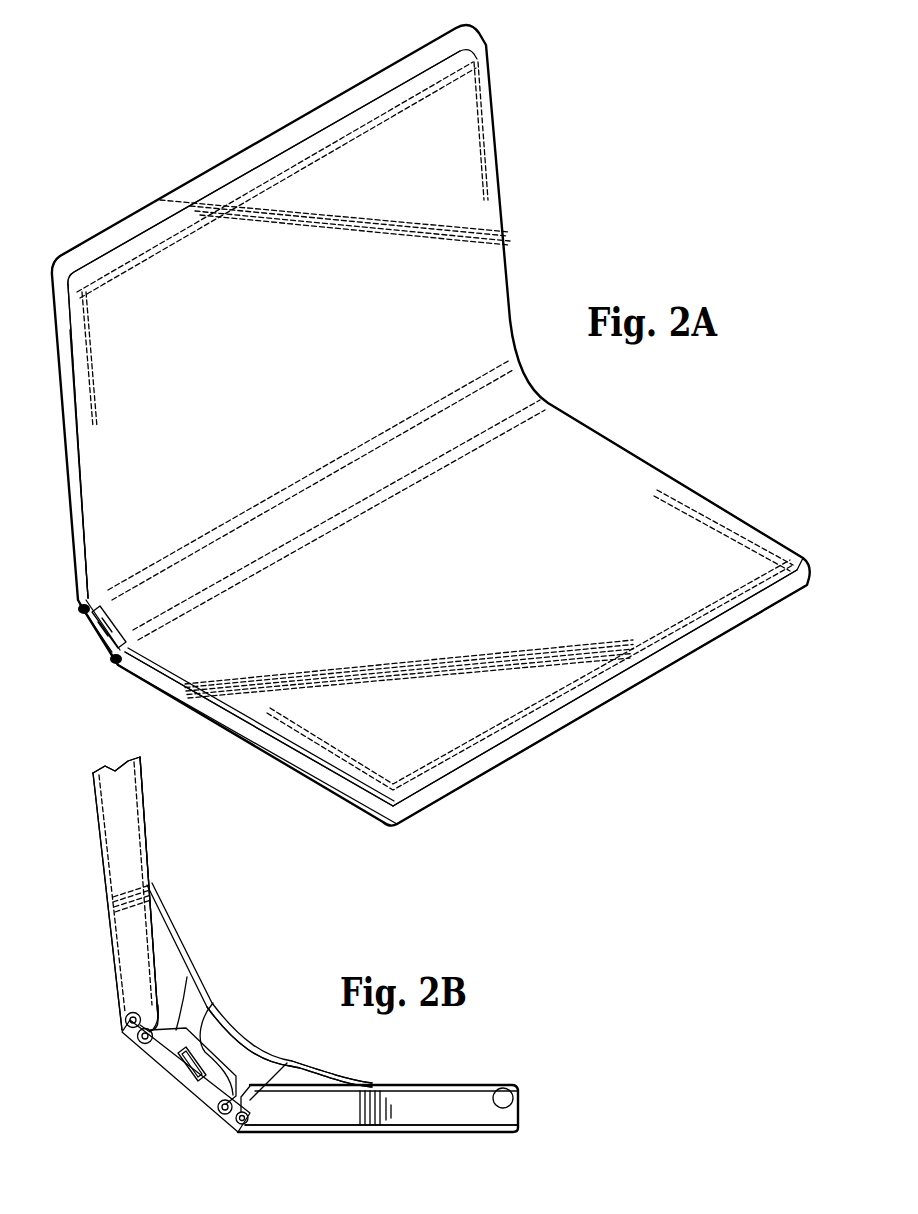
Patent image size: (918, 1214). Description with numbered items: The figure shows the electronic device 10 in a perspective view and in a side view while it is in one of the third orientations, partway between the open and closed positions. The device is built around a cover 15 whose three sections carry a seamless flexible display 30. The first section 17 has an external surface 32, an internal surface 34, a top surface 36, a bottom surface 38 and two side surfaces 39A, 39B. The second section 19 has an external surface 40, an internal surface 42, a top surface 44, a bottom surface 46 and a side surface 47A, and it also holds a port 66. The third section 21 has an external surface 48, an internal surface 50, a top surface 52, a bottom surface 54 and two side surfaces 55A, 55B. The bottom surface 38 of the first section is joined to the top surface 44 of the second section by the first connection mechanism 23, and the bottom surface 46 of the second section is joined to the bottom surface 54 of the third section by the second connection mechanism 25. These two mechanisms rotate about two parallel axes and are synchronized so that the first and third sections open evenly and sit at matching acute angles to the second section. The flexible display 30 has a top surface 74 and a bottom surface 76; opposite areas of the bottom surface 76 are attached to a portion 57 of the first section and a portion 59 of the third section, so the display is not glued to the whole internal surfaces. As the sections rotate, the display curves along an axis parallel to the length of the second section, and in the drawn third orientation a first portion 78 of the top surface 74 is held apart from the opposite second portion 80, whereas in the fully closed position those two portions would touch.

In FIG. 2A, the electronic device 10 is at (614, 248).
In FIG. 2B, the electronic device 10 is at (278, 938).
In FIG. 2A, the cover 15 is at (250, 139).
In FIG. 2B, the cover 15 is at (88, 813).
In FIG. 2A, the first section 17 is at (58, 281).
In FIG. 2B, the first section 17 is at (135, 802).
In FIG. 2A, the second section 19 is at (96, 628).
In FIG. 2B, the second section 19 is at (212, 1094).
In FIG. 2A, the third section 21 is at (315, 775).
In FIG. 2B, the third section 21 is at (433, 1097).
In FIG. 2A, the first connection mechanism 23 is at (80, 607).
In FIG. 2B, the first connection mechanism 23 is at (126, 1032).
In FIG. 2A, the second connection mechanism 25 is at (113, 665).
In FIG. 2B, the second connection mechanism 25 is at (236, 1130).
In FIG. 2A, the flexible display 30 is at (314, 331).
In FIG. 2B, the flexible display 30 is at (262, 1037).
In FIG. 2B, the external surface 32 is at (110, 864).
In FIG. 2B, the internal surface 34 is at (157, 951).
In FIG. 2A, the top surface 36 is at (586, 707).
In FIG. 2B, the bottom surface 38 is at (158, 1012).
In FIG. 2A, the side surface 39A is at (78, 461).
In FIG. 2B, the side surface 39A is at (130, 848).
In FIG. 2A, the side surface 39B is at (495, 128).
In FIG. 2B, the external surface 40 is at (152, 1070).
In FIG. 2B, the internal surface 42 is at (216, 1018).
In FIG. 2B, the top surface 44 is at (180, 974).
In FIG. 2B, the bottom surface 46 is at (278, 1072).
In FIG. 2B, the side surface 47A is at (200, 1100).
In FIG. 2B, the external surface 48 is at (352, 1130).
In FIG. 2B, the internal surface 50 is at (321, 1085).
In FIG. 2A, the top surface 52 is at (328, 115).
In FIG. 2B, the bottom surface 54 is at (250, 1100).
In FIG. 2A, the side surface 55A is at (250, 742).
In FIG. 2B, the side surface 55A is at (447, 1125).
In FIG. 2A, the side surface 55B is at (653, 470).
In FIG. 2A, the portion of the first section 57 is at (333, 152).
In FIG. 2A, the portion of the third section 59 is at (505, 720).
In FIG. 2B, the port 66 is at (182, 1080).
In FIG. 2B, the top surface 74 is at (470, 1085).
In FIG. 2B, the bottom surface 76 is at (513, 1103).
In FIG. 2A, the first portion 78 is at (712, 630).
In FIG. 2A, the second portion 80 is at (150, 236).